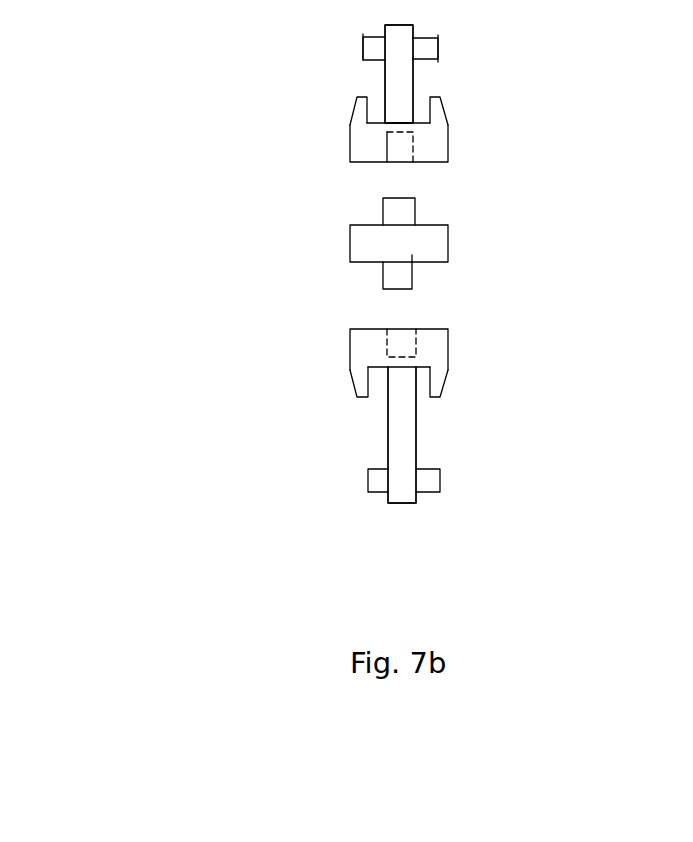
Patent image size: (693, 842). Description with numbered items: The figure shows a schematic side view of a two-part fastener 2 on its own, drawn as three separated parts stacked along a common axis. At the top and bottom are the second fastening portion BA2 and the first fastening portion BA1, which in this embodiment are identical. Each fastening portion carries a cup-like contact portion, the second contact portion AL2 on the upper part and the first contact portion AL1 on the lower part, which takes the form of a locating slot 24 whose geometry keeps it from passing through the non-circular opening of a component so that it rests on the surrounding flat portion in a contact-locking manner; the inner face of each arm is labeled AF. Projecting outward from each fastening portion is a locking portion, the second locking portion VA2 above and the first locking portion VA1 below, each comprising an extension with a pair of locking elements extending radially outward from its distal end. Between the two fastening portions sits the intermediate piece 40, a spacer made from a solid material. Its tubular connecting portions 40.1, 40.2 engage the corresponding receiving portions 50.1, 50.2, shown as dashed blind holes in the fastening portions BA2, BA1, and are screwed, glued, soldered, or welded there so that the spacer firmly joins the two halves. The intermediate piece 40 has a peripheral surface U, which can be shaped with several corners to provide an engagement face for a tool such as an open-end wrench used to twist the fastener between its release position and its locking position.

The fastener 2 is at (378, 288).
The locating slot 24 is at (368, 90).
The second locking portion VA2 is at (455, 48).
The first locking portion VA1 is at (347, 477).
The second fastening portion BA2 is at (433, 117).
The first fastening portion BA1 is at (442, 397).
The second contact portion AL2 is at (357, 95).
The first contact portion AL1 is at (350, 385).
The receptacle AF is at (432, 92).
The receiving portion 50.1 is at (395, 147).
The receiving portion 50.2 is at (395, 345).
The peripheral surface U is at (406, 255).
The intermediate piece 40 is at (362, 243).
The connecting portion 40.1 is at (390, 212).
The connecting portion 40.2 is at (378, 280).